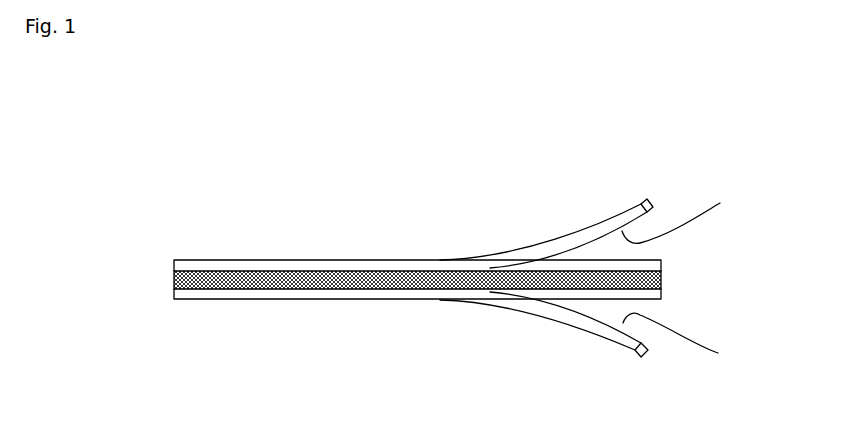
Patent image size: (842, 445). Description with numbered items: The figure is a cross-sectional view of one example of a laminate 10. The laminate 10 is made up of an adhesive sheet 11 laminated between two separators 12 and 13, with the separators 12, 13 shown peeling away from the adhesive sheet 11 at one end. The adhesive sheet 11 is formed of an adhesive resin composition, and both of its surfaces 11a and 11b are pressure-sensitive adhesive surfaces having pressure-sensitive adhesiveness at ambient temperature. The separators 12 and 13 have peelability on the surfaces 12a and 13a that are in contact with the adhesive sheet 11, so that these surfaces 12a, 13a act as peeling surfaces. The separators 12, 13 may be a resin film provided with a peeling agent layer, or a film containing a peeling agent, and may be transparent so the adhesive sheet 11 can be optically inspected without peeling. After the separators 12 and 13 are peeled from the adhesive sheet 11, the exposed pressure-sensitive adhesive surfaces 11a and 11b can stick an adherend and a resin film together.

The laminate 10 is at (605, 147).
The adhesive sheet 11 is at (488, 275).
The surface of the adhesive sheet 11a is at (661, 264).
The surface of the adhesive sheet 11b is at (661, 295).
The separator 12 is at (602, 207).
The surface of the separator 12a is at (651, 206).
The separator 13 is at (601, 353).
The surface of the separator 13a is at (645, 352).